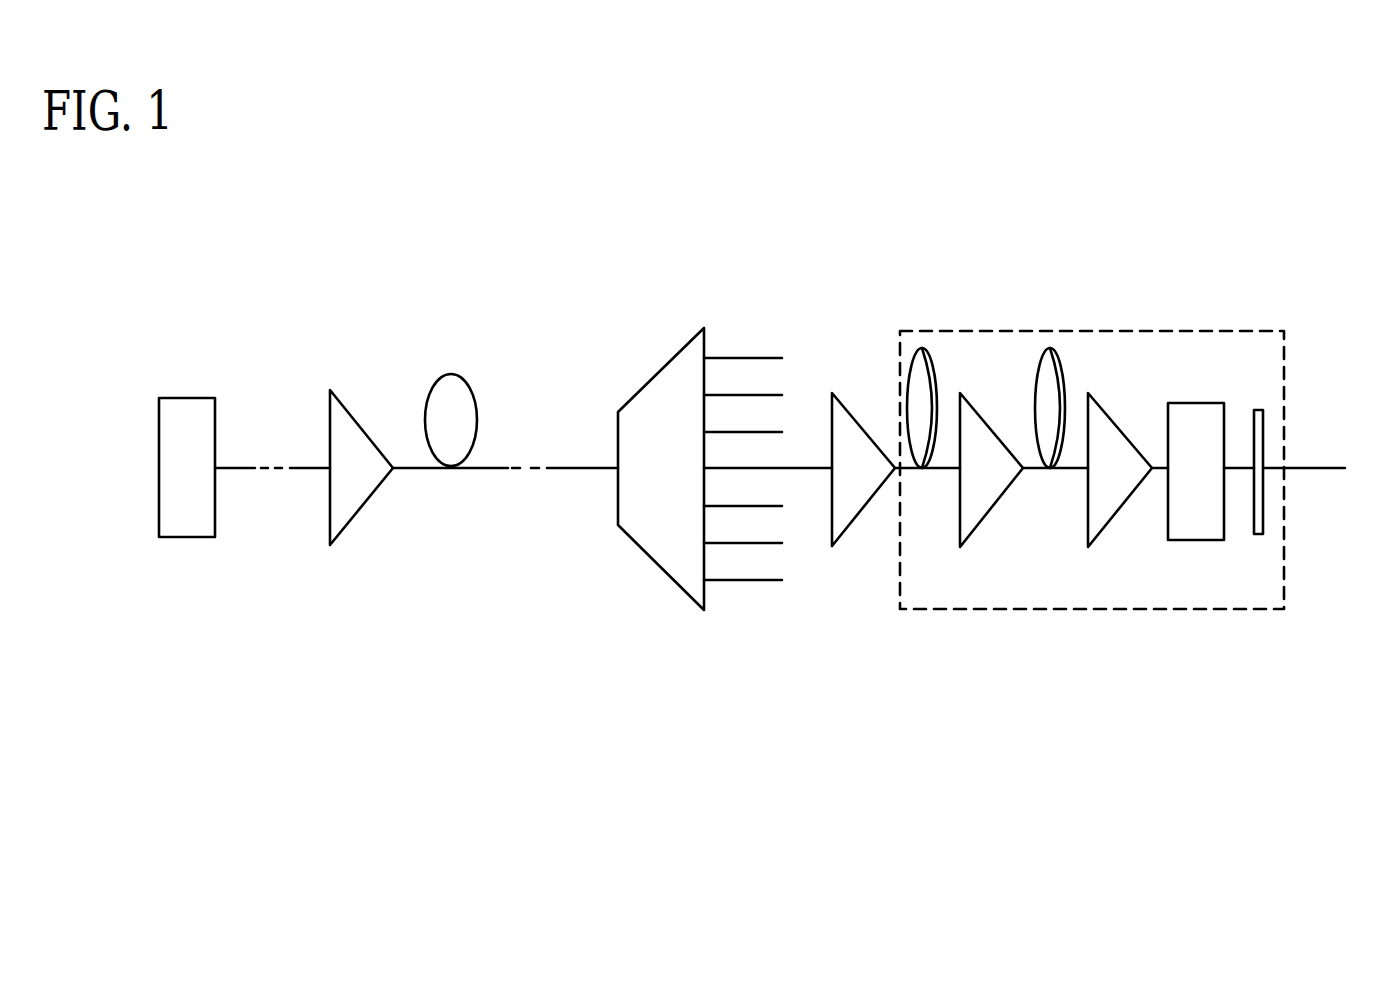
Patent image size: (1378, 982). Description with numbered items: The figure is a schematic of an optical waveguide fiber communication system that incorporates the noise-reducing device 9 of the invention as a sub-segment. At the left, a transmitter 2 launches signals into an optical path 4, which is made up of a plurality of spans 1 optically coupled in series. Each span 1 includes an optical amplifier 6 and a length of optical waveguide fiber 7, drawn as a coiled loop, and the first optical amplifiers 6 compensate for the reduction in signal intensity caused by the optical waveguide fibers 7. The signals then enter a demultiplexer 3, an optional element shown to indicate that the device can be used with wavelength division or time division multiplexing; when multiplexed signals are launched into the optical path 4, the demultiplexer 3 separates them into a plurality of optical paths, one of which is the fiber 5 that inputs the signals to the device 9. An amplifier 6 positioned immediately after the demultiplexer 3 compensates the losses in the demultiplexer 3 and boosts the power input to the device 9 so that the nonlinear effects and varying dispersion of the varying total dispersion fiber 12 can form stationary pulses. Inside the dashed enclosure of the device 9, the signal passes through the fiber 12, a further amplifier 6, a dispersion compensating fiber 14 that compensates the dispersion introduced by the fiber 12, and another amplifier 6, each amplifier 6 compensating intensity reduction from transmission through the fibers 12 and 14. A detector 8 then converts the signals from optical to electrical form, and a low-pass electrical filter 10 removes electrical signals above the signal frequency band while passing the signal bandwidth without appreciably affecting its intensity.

The span 1 is at (383, 338).
The transmitter 2 is at (182, 538).
The demultiplexer 3 is at (660, 371).
The optical path 4 is at (273, 467).
The fiber 5 is at (772, 432).
The optical amplifier 6 is at (358, 511).
The optical waveguide fiber 7 is at (452, 375).
The detector 8 is at (1204, 403).
The device 9 is at (1214, 630).
The electrical filter 10 is at (1264, 424).
The varying total dispersion fiber 12 is at (917, 348).
The dispersion compensating fiber 14 is at (1047, 348).